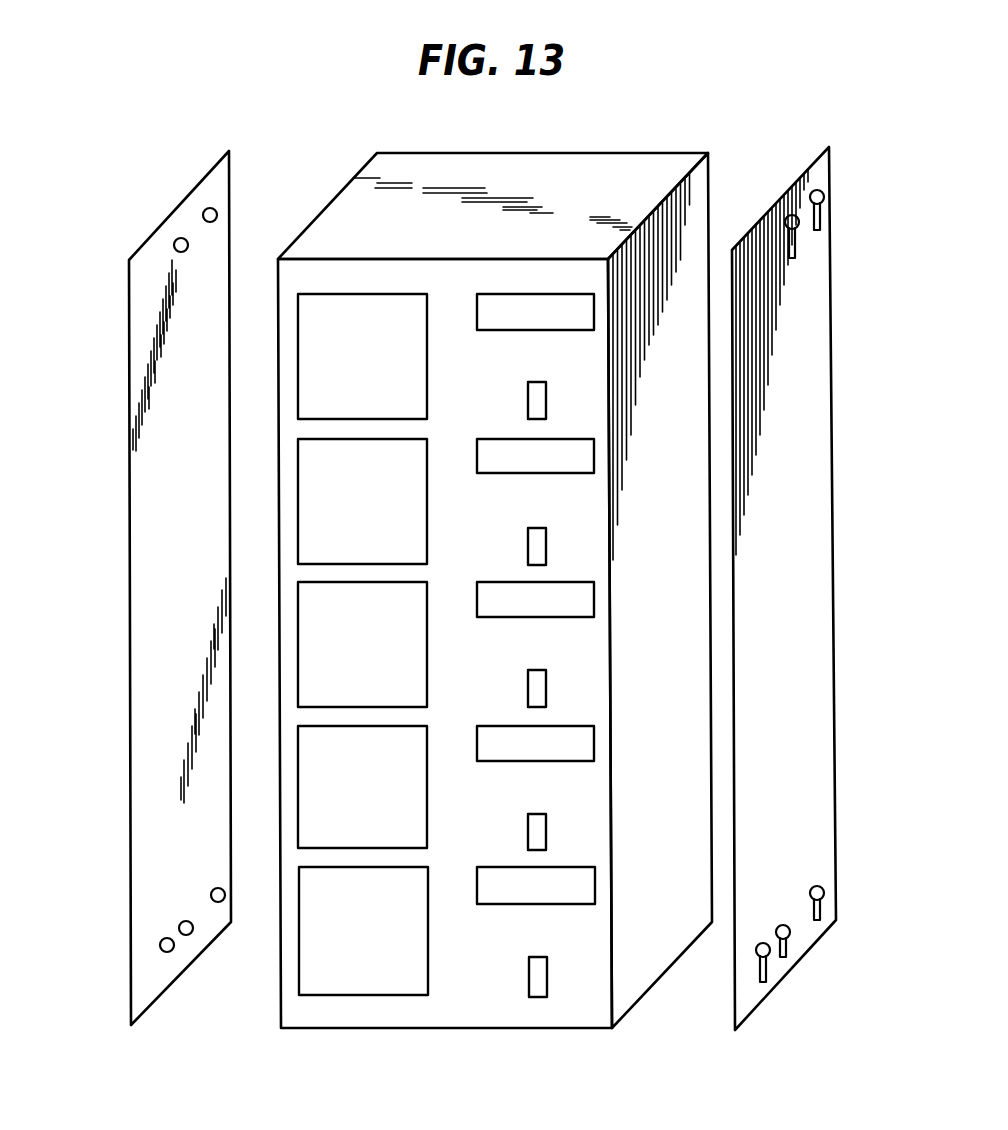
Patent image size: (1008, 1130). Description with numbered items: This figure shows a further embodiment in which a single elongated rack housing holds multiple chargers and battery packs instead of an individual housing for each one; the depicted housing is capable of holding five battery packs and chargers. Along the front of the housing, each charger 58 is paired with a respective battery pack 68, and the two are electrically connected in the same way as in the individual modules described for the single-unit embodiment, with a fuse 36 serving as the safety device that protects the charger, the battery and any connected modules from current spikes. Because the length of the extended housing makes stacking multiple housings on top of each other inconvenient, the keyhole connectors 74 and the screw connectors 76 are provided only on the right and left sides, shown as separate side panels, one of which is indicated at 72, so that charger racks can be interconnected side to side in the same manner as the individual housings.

The fuse 36 is at (541, 403).
The charger 58 is at (353, 462).
The battery pack 68 is at (546, 312).
The side panel 72 is at (118, 522).
The keyhole connectors 74 is at (824, 197).
The screw connectors 76 is at (203, 207).